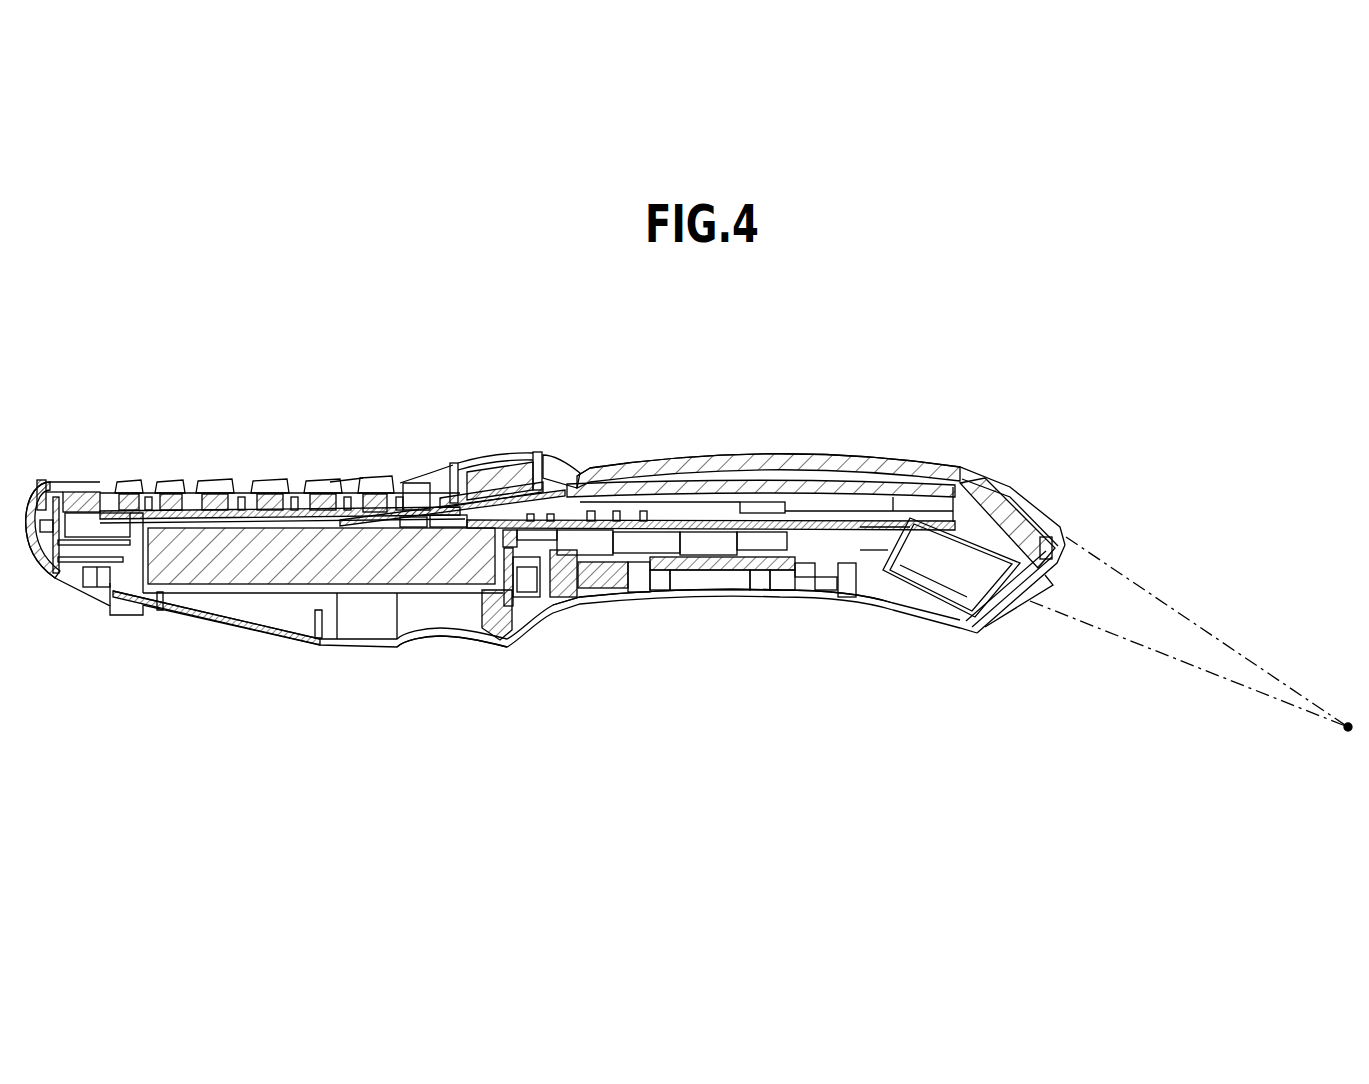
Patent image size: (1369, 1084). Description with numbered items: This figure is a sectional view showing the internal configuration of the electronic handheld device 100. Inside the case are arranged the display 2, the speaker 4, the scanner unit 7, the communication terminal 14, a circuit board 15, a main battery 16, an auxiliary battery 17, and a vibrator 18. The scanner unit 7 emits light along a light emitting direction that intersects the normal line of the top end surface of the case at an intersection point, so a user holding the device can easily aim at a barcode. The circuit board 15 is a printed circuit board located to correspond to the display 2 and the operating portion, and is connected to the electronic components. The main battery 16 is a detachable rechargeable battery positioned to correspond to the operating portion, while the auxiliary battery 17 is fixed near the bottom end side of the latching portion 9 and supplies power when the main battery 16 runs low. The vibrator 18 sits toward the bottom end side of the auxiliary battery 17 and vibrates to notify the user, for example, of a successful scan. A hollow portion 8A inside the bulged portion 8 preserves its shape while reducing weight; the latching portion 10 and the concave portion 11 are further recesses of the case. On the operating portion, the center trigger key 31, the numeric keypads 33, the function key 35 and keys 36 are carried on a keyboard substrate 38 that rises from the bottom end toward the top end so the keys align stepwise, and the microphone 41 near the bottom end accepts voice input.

The electronic handheld device 100 is at (903, 386).
The display 2 is at (735, 480).
The speaker 4 is at (997, 522).
The scanner unit 7 is at (948, 570).
The bulged portion 8 is at (302, 648).
The hollow portion 8A is at (268, 612).
The latching portion 9 is at (540, 608).
The latching portion 10 is at (438, 641).
The concave portion 11 is at (739, 606).
The communication terminal 14 is at (93, 587).
The circuit board 15 is at (800, 522).
The main battery 16 is at (225, 552).
The auxiliary battery 17 is at (713, 592).
The vibrator 18 is at (613, 590).
The center trigger key 31 is at (495, 478).
The numeric keypads 33 is at (450, 462).
The function key 35 is at (210, 488).
The buttons 36 is at (110, 455).
The keyboard substrate 38 is at (355, 528).
The microphone 41 is at (83, 490).